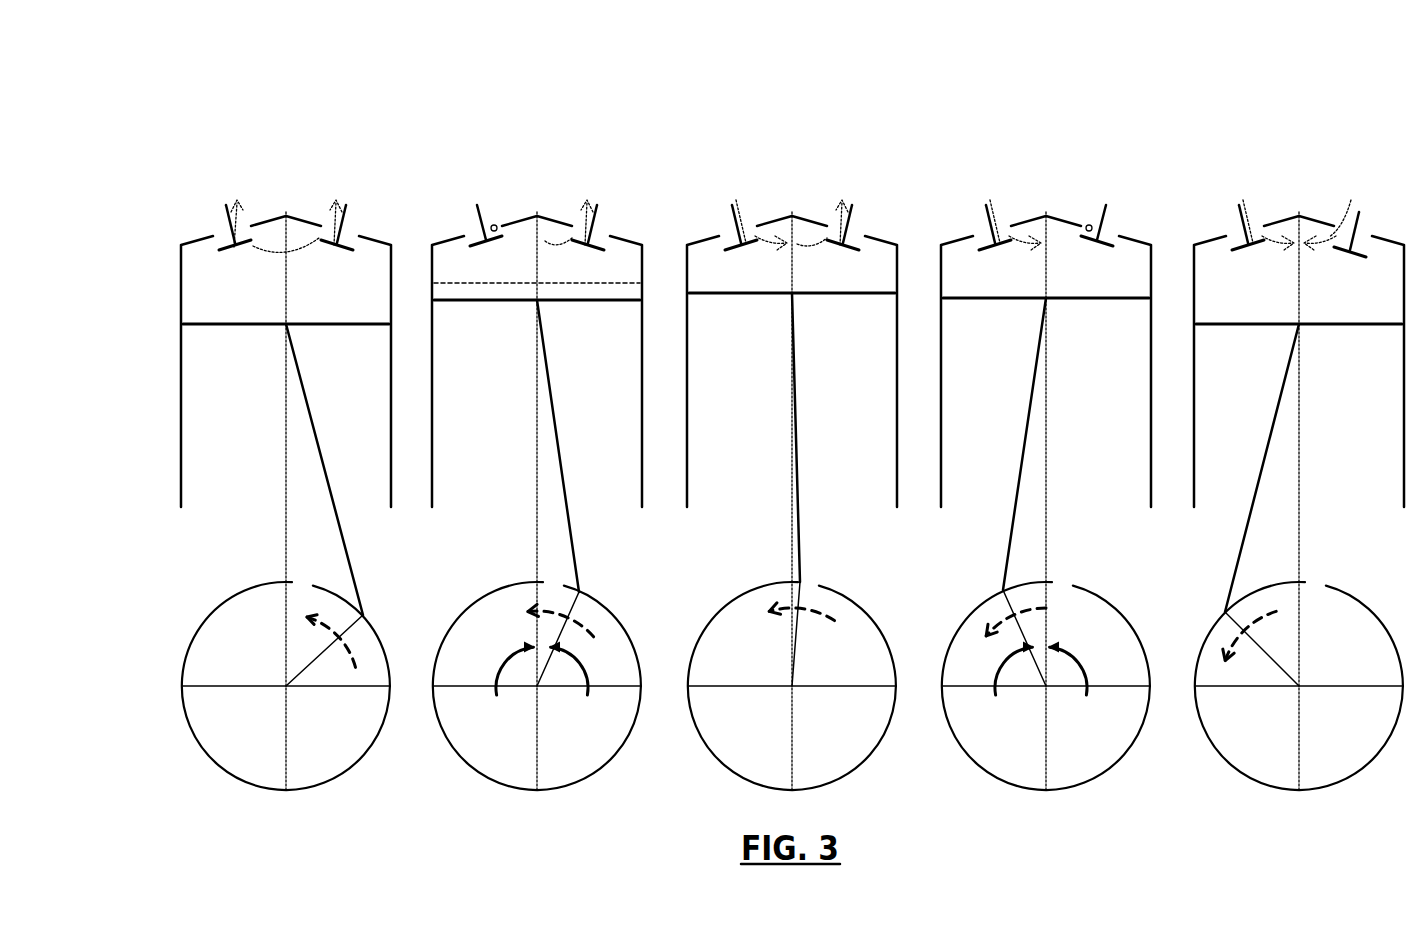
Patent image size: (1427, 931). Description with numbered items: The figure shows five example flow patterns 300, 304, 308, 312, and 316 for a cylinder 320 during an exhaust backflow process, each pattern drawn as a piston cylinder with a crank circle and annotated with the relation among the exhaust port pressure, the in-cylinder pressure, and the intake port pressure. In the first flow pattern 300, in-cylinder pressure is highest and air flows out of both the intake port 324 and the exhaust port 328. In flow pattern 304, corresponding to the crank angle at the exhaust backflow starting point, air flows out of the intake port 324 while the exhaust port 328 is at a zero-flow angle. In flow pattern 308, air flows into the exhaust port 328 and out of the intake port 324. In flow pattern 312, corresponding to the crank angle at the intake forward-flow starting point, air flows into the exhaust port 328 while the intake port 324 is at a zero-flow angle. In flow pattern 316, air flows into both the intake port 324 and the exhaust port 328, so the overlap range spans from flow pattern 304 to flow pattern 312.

The flow pattern 300 is at (205, 108).
The flow pattern 304 is at (456, 105).
The flow pattern 308 is at (715, 110).
The flow pattern 312 is at (959, 110).
The flow pattern 316 is at (1210, 105).
The cylinder 320 is at (250, 361).
The intake port 324 is at (375, 225).
The exhaust port 328 is at (225, 224).